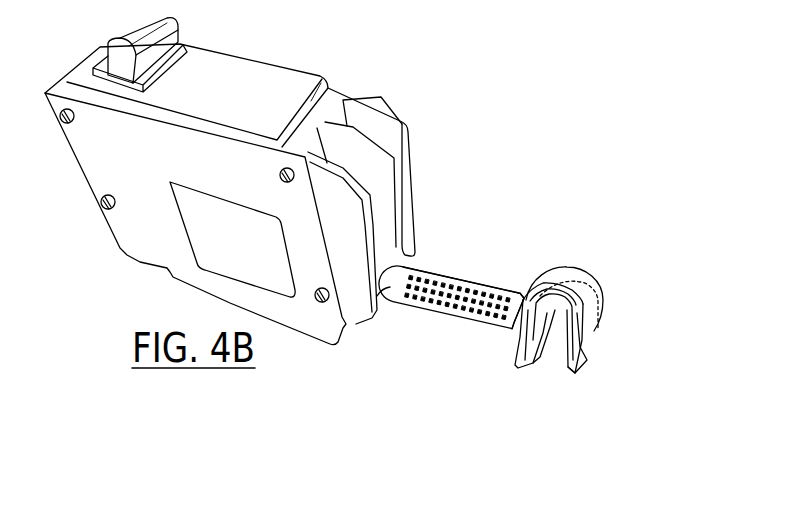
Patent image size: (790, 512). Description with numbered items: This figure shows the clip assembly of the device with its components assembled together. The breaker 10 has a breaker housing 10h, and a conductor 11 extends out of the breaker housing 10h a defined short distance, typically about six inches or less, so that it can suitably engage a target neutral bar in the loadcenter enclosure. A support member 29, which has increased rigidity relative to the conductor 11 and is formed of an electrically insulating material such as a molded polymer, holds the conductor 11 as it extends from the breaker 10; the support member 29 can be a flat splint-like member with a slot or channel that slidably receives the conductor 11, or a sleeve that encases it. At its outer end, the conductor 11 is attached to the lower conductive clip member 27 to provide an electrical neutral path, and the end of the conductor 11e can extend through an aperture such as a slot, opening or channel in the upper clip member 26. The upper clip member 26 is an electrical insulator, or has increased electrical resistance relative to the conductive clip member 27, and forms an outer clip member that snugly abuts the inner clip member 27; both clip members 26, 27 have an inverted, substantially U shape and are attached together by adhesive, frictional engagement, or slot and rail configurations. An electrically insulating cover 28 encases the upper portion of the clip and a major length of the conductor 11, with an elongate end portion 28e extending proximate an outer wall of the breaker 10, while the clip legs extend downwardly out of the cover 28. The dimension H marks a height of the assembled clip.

The breaker 10 is at (283, 86).
The breaker housing 10h is at (95, 168).
The conductor 11 is at (418, 277).
The end of the conductor 11e is at (526, 289).
The elongate end portion 28e is at (450, 273).
The support member 29 is at (418, 300).
The electrically insulating cover 28 is at (583, 268).
The upper clip member 26 is at (587, 328).
The lower conductive clip member 27 is at (575, 368).
The height dimension H is at (605, 280).